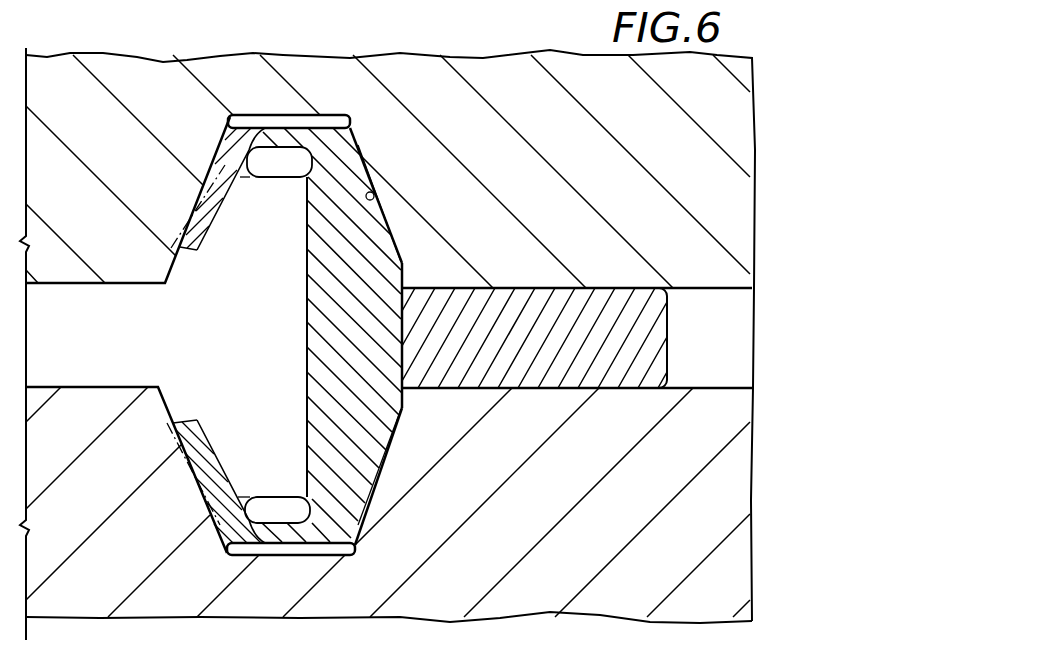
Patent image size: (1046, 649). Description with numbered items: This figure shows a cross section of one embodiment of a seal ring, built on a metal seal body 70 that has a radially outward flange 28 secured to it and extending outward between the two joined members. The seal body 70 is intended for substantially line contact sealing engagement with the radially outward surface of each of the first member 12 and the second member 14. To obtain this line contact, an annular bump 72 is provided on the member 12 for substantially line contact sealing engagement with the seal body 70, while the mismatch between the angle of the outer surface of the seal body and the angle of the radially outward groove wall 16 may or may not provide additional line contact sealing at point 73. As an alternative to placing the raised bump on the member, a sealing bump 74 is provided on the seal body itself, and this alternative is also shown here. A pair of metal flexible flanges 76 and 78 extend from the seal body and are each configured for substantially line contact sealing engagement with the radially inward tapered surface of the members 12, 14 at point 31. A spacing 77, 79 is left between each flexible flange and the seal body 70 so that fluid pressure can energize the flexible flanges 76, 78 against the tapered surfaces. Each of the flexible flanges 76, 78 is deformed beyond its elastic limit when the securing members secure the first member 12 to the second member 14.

The first member 12 is at (732, 197).
The second member 14 is at (730, 493).
The radially outward groove wall 16 is at (375, 200).
The radially outward flange 28 is at (643, 330).
The point 31 is at (172, 249).
The metal seal body 70 is at (330, 325).
The annular bump 72 is at (352, 136).
The point 73 is at (403, 262).
The sealing bump 74 is at (358, 533).
The flexible flange 76 is at (203, 225).
The spacing 77 is at (284, 219).
The flexible flange 78 is at (208, 464).
The spacing 79 is at (274, 490).